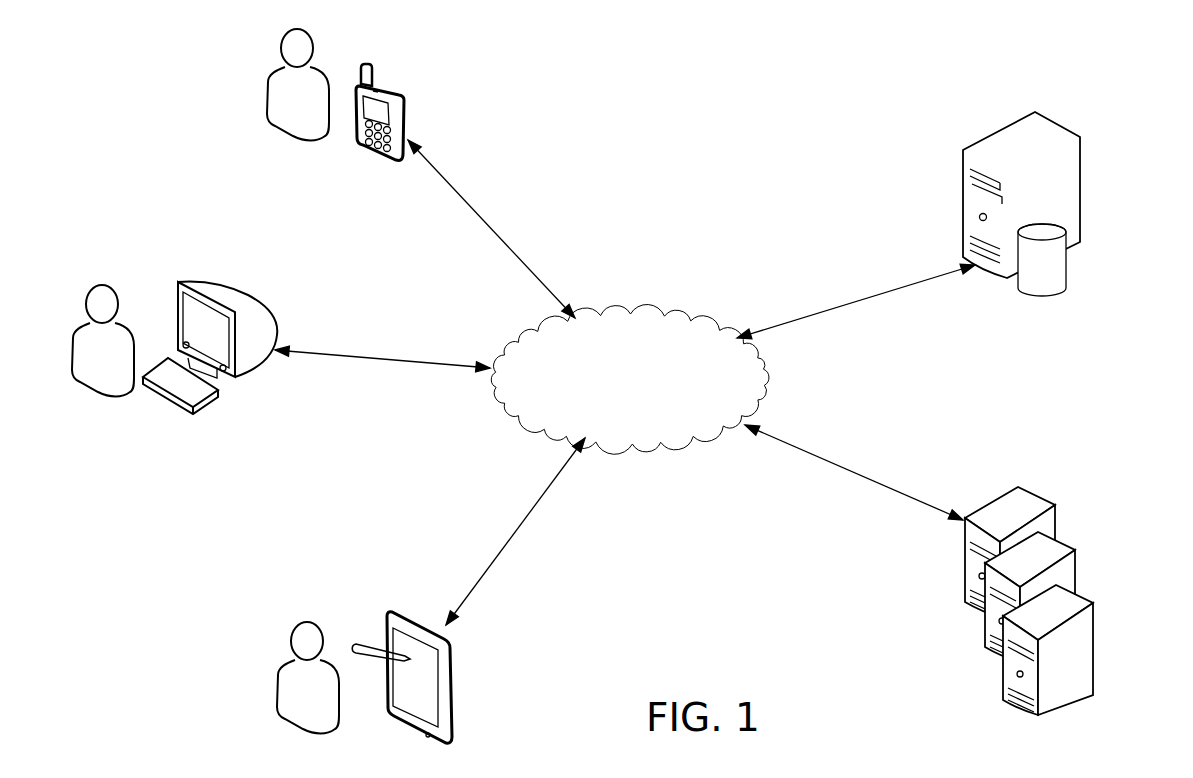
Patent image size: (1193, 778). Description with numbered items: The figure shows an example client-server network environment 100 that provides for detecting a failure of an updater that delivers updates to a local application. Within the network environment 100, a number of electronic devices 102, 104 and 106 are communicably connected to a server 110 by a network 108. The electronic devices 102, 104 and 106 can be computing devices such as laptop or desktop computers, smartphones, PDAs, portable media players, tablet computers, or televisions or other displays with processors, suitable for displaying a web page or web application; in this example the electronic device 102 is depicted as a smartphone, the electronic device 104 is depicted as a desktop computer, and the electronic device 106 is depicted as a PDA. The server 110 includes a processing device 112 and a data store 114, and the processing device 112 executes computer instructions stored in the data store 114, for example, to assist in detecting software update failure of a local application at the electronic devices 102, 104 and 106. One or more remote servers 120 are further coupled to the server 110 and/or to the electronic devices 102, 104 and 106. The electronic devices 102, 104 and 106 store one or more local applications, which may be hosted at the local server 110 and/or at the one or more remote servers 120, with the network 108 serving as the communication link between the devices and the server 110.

The network environment 100 is at (742, 82).
The electronic device 102 is at (394, 90).
The electronic device 104 is at (247, 292).
The electronic device 106 is at (397, 612).
The network 108 is at (632, 314).
The server 110 is at (963, 298).
The processing device 112 is at (1057, 120).
The data store 114 is at (1070, 283).
The remote servers 120 is at (960, 683).